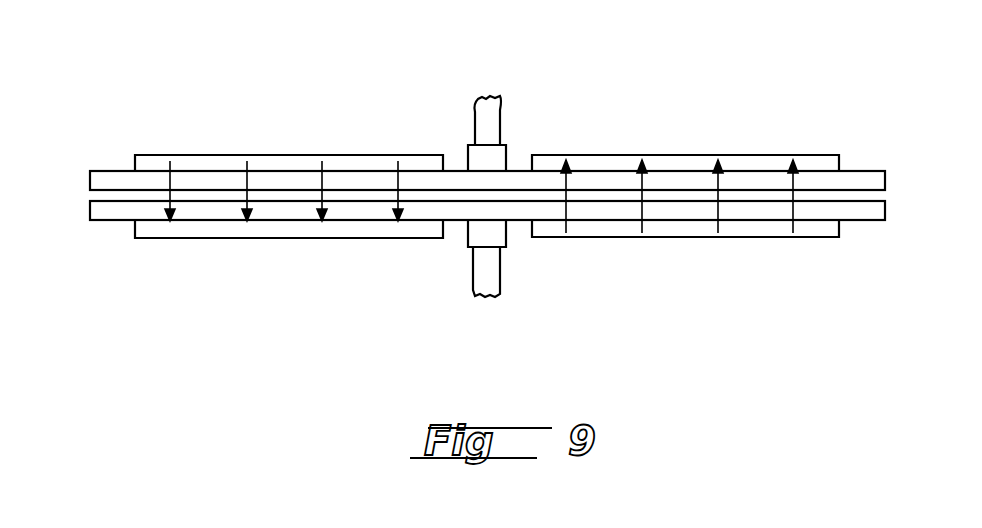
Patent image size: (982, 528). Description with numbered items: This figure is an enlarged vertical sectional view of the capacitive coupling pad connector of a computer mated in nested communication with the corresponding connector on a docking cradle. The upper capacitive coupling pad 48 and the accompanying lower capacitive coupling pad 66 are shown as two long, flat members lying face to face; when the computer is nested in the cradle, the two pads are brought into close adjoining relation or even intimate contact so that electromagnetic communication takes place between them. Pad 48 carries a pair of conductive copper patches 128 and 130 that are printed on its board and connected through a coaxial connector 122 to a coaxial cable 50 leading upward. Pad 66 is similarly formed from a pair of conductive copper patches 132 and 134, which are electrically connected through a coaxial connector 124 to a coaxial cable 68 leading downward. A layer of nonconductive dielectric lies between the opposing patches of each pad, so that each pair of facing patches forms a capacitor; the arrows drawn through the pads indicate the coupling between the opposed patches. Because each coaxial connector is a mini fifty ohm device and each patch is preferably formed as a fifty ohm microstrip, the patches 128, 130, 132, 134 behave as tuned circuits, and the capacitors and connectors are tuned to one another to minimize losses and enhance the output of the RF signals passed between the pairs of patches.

The capacitive coupling pad 48 is at (88, 180).
The capacitive coupling pad 66 is at (87, 216).
The conductive copper patch 128 is at (270, 155).
The conductive copper patch 132 is at (275, 232).
The conductive copper patch 130 is at (650, 155).
The conductive copper patch 134 is at (690, 230).
The coaxial connector 122 is at (506, 147).
The coaxial connector 124 is at (497, 233).
The coaxial cable 50 is at (475, 117).
The coaxial cable 68 is at (500, 278).